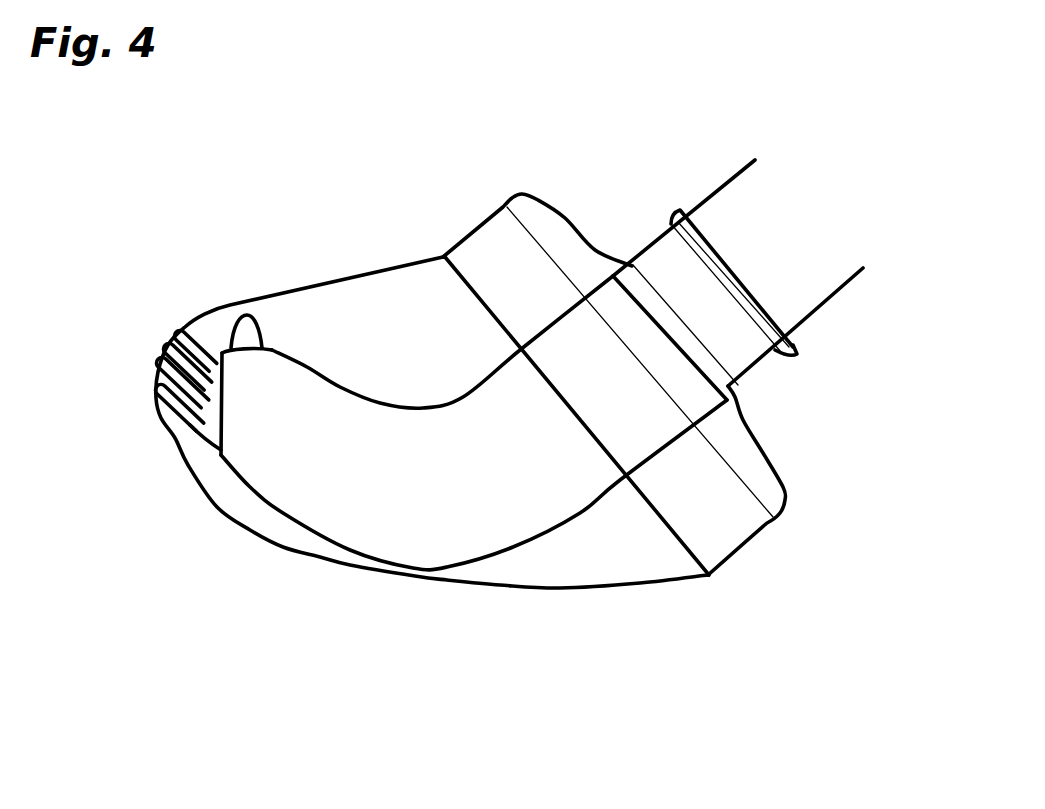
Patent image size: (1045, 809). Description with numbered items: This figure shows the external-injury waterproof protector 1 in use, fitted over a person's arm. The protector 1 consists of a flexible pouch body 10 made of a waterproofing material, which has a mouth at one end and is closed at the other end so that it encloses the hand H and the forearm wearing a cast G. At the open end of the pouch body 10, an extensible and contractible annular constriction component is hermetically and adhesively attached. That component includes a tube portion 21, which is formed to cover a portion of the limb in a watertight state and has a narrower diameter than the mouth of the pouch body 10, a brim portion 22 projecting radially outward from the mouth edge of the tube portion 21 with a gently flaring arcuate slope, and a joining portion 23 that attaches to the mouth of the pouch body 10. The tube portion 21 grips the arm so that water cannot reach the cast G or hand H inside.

The external-injury waterproof protector 1 is at (346, 206).
The pouch body 10 is at (438, 588).
The tube portion 21 is at (737, 350).
The brim portion 22 is at (807, 325).
The joining portion 23 is at (747, 550).
The hand H is at (204, 427).
The cast G is at (328, 495).